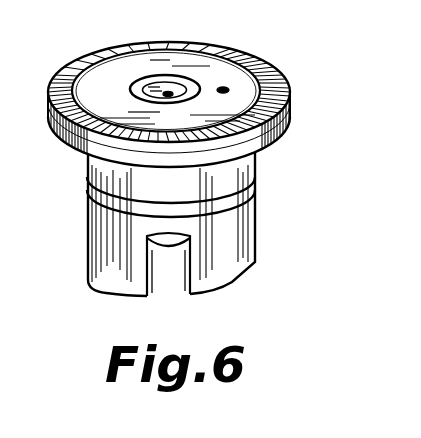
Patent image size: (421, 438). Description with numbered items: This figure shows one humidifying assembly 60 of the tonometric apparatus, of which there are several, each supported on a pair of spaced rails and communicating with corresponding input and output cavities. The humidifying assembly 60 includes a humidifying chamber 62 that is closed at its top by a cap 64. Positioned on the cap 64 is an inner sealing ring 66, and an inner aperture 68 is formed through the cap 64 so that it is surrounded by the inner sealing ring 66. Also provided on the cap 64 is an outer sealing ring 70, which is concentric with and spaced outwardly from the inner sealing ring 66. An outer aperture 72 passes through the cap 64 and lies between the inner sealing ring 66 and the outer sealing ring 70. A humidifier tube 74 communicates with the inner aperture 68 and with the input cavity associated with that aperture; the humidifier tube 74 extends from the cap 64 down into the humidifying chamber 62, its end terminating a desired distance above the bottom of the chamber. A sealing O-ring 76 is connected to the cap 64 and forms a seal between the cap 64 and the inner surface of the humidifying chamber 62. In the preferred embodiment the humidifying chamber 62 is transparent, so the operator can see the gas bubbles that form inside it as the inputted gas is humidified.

The humidifying assembly 60 is at (76, 208).
The humidifying chamber 62 is at (90, 245).
The cap 64 is at (64, 107).
The inner sealing ring 66 is at (198, 78).
The inner aperture 68 is at (169, 91).
The outer sealing ring 70 is at (92, 128).
The outer aperture 72 is at (228, 89).
The humidifier tube 74 is at (177, 270).
The sealing O-ring 76 is at (240, 188).